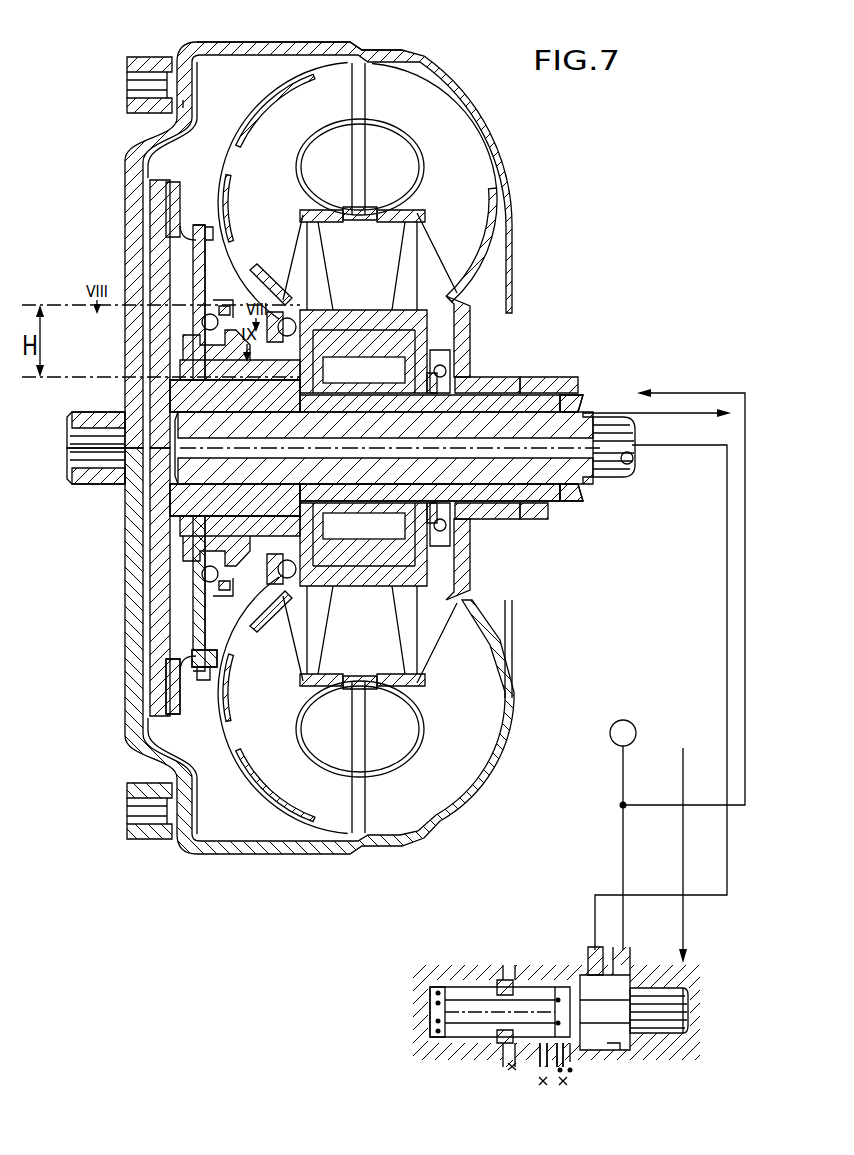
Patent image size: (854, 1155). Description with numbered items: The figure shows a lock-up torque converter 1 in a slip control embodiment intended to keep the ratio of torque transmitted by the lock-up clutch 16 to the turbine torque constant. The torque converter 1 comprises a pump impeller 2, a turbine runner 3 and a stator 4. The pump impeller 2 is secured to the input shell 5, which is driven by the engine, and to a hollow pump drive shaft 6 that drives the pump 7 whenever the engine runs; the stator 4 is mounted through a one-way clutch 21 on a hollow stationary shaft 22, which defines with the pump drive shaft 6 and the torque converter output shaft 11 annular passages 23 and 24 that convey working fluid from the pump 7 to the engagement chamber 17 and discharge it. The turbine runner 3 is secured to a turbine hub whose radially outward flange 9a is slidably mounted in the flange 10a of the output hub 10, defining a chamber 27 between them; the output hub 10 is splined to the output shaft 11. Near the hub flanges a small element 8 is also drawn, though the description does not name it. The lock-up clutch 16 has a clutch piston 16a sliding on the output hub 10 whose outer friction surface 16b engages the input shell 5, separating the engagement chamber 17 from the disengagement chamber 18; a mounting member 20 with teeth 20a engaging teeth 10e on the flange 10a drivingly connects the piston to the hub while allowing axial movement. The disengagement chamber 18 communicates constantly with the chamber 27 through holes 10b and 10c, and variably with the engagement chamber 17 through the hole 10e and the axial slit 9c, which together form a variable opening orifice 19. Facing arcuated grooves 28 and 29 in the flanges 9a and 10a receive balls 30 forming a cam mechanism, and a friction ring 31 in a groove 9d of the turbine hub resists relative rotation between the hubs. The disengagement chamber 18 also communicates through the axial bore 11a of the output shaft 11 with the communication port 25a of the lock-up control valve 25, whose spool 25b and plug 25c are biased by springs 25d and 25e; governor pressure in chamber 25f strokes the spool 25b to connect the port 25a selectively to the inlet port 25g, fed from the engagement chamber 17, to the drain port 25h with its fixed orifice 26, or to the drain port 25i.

The torque converter 1 is at (407, 45).
The pump impeller 2 is at (447, 154).
The turbine runner 3 is at (272, 163).
The stator 4 is at (362, 279).
The converter cover or input shell 5 is at (160, 212).
The hollow pump drive shaft 6 is at (488, 377).
The pump 7 is at (627, 720).
The spring 8 is at (290, 316).
The radially outward flange of the turbine hub 9a is at (205, 345).
The axial slit 9c is at (305, 355).
The groove 9d is at (333, 448).
The output hub 10 is at (178, 508).
The radially outward flange of the output hub 10a is at (200, 248).
The axial hole 10b is at (235, 448).
The hole 10c is at (396, 448).
The hole 10e is at (202, 680).
The torque converter output shaft 11 is at (613, 478).
The axial bore 11a is at (573, 470).
The lock-up clutch 16 is at (148, 182).
The clutch piston 16a is at (172, 226).
The outer friction surface 16b is at (183, 100).
The converter chamber or engagement chamber 17 is at (244, 101).
The lock-up control chamber or disengagement chamber 18 is at (148, 160).
The variable opening orifice 19 is at (340, 345).
The mounting member 20 is at (172, 673).
The teeth 20a is at (215, 662).
The one-way clutch 21 is at (397, 358).
The hollow stationary shaft 22 is at (562, 393).
The annular passage 23 is at (527, 377).
The annular passage 24 is at (575, 396).
The lock-up control valve 25 is at (669, 1068).
The communication port 25a is at (592, 953).
The spool 25b is at (675, 1008).
The plug 25c is at (502, 1047).
The spring 25d is at (455, 990).
The spring 25e is at (440, 988).
The chamber 25f is at (688, 1030).
The inlet port 25g is at (633, 965).
The drain port 25h is at (552, 1070).
The drain port 25i is at (540, 1070).
The fixed orifice 26 is at (574, 1068).
The chamber 27 is at (202, 560).
The arcuated groove 28 is at (258, 275).
The arcuated groove 29 is at (202, 322).
The ball 30 is at (222, 304).
The friction ring 31 is at (236, 572).